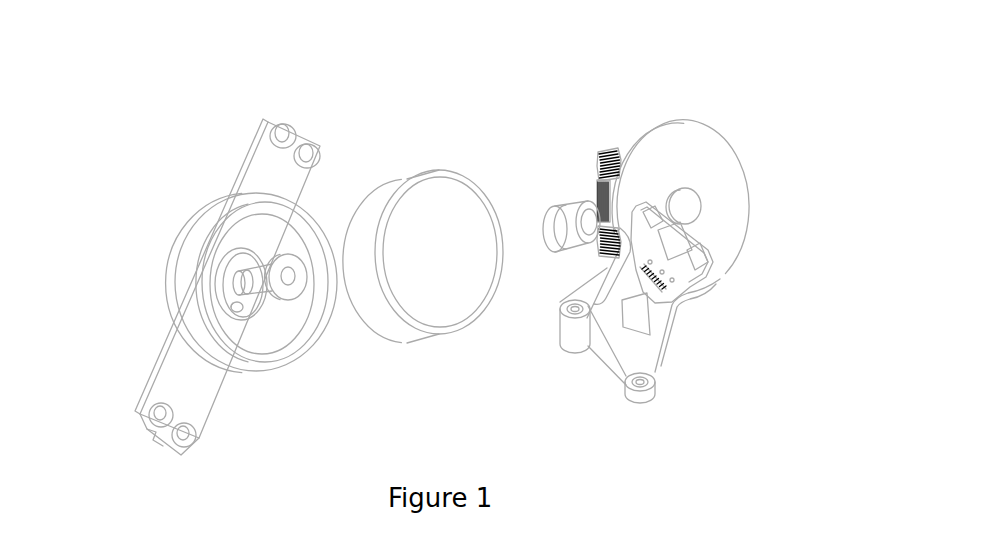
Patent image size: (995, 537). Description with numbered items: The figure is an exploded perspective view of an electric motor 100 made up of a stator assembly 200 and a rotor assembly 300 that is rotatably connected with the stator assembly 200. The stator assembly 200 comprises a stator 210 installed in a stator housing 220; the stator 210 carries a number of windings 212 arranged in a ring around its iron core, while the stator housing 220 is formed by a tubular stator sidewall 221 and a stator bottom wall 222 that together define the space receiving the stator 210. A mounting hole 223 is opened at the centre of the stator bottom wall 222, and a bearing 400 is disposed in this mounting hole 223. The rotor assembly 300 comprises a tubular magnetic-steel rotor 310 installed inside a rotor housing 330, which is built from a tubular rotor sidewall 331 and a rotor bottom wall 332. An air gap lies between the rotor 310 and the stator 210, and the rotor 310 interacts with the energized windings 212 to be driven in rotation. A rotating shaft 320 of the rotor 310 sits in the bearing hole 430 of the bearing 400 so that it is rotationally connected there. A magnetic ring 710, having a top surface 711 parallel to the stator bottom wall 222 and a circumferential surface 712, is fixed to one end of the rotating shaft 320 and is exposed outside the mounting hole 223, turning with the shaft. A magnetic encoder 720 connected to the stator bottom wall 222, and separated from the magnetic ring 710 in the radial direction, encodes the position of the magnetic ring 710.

The electric motor 100 is at (514, 42).
The stator assembly 200 is at (773, 148).
The stator 210 is at (593, 154).
The windings 212 is at (620, 150).
The stator housing 220 is at (728, 100).
The stator sidewall 221 is at (638, 133).
The stator bottom wall 222 is at (720, 162).
The mounting hole 223 is at (697, 224).
The rotor assembly 300 is at (351, 92).
The rotor 310 is at (385, 183).
The rotating shaft 320 is at (257, 272).
The rotor housing 330 is at (95, 240).
The rotor sidewall 331 is at (185, 259).
The rotor bottom wall 332 is at (237, 333).
The bearing 400 is at (553, 238).
The bearing hole 430 is at (593, 221).
The magnetic ring 710 is at (350, 412).
The top surface 711 is at (262, 290).
The circumferential surface 712 is at (291, 300).
The magnetic encoder 720 is at (692, 279).